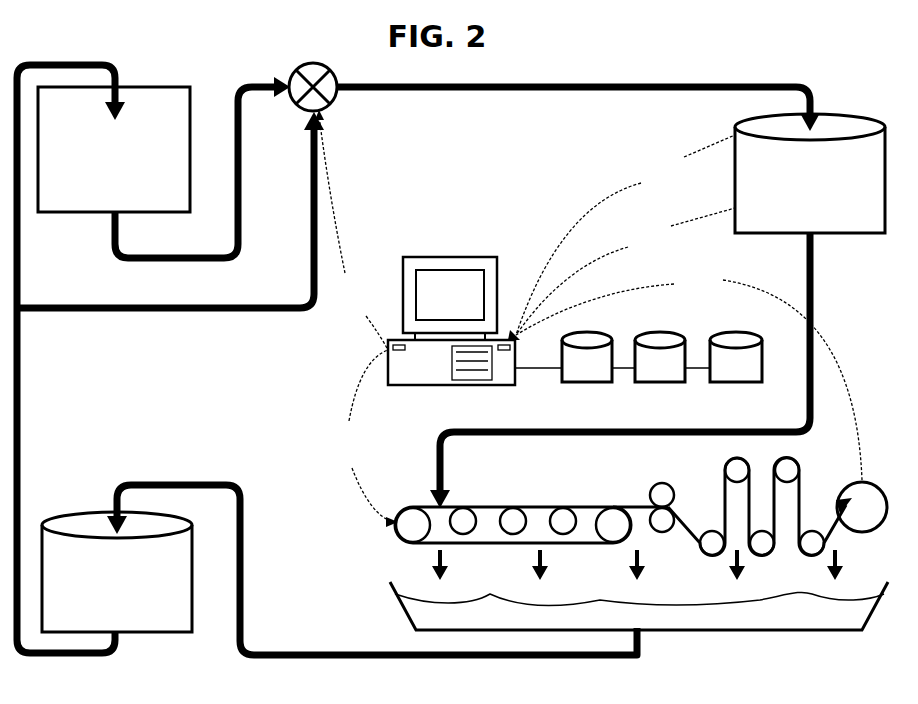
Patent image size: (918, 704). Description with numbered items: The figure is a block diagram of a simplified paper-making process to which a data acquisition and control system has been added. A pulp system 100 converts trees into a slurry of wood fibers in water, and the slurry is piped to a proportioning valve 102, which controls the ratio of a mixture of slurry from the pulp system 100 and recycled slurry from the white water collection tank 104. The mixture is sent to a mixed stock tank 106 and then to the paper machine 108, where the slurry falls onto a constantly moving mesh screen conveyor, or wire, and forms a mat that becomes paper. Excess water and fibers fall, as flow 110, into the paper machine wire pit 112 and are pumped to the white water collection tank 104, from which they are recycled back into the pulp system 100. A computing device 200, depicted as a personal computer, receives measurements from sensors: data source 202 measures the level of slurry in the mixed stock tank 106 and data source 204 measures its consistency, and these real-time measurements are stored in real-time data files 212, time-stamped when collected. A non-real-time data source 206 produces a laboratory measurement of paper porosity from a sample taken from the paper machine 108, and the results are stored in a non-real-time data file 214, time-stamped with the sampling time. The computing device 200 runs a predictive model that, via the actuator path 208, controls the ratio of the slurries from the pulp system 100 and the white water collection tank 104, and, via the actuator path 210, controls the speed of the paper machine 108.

The pulp system 100 is at (114, 149).
The proportioning valve 102 is at (298, 66).
The white water collection tank 104 is at (117, 572).
The mixed stock tank 106 is at (810, 173).
The paper machine 108 is at (450, 505).
The flow 110 is at (448, 553).
The paper machine wire pit 112 is at (639, 606).
The computing device 200 is at (549, 321).
The data source 202 is at (625, 235).
The data source 204 is at (625, 271).
The data source 206 is at (685, 366).
The actuator path 208 is at (351, 230).
The actuator path 210 is at (356, 438).
The real-time data files 212 is at (660, 384).
The non-real-time data file 214 is at (736, 384).